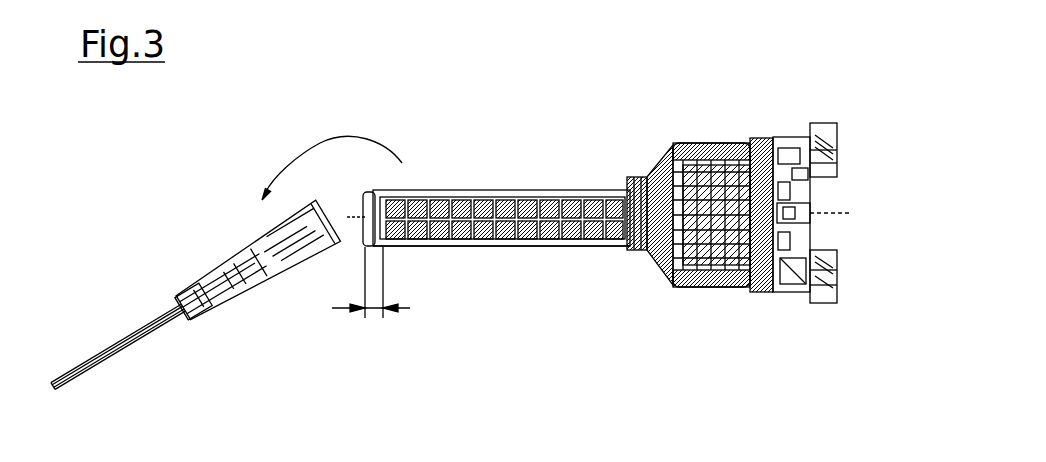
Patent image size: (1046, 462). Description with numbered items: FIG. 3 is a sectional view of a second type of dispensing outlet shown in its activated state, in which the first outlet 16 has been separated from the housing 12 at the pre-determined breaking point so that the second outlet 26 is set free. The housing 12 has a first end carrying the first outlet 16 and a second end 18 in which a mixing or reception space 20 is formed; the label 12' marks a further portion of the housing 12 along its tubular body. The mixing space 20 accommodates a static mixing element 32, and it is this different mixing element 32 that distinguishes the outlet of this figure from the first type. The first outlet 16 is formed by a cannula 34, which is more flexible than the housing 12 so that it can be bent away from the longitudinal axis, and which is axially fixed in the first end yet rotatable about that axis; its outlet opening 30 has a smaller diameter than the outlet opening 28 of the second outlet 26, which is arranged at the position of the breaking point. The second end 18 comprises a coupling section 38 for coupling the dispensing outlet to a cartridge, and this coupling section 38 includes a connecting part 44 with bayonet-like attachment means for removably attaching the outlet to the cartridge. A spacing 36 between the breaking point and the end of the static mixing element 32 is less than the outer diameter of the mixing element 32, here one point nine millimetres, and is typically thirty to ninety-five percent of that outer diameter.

The housing 12 is at (496, 178).
The cartridge underside 12' is at (501, 276).
The mixing element 32 is at (498, 188).
The mixing or reception space 20 is at (623, 233).
The second end 18 is at (730, 147).
The coupling section 38 is at (822, 130).
The connecting part 44 is at (820, 297).
The spacing 36 is at (377, 310).
The second outlet 26 is at (365, 217).
The outlet opening 28 is at (365, 217).
The first outlet 16 is at (203, 313).
The cannula 34 is at (123, 340).
The outlet opening 30 is at (50, 390).